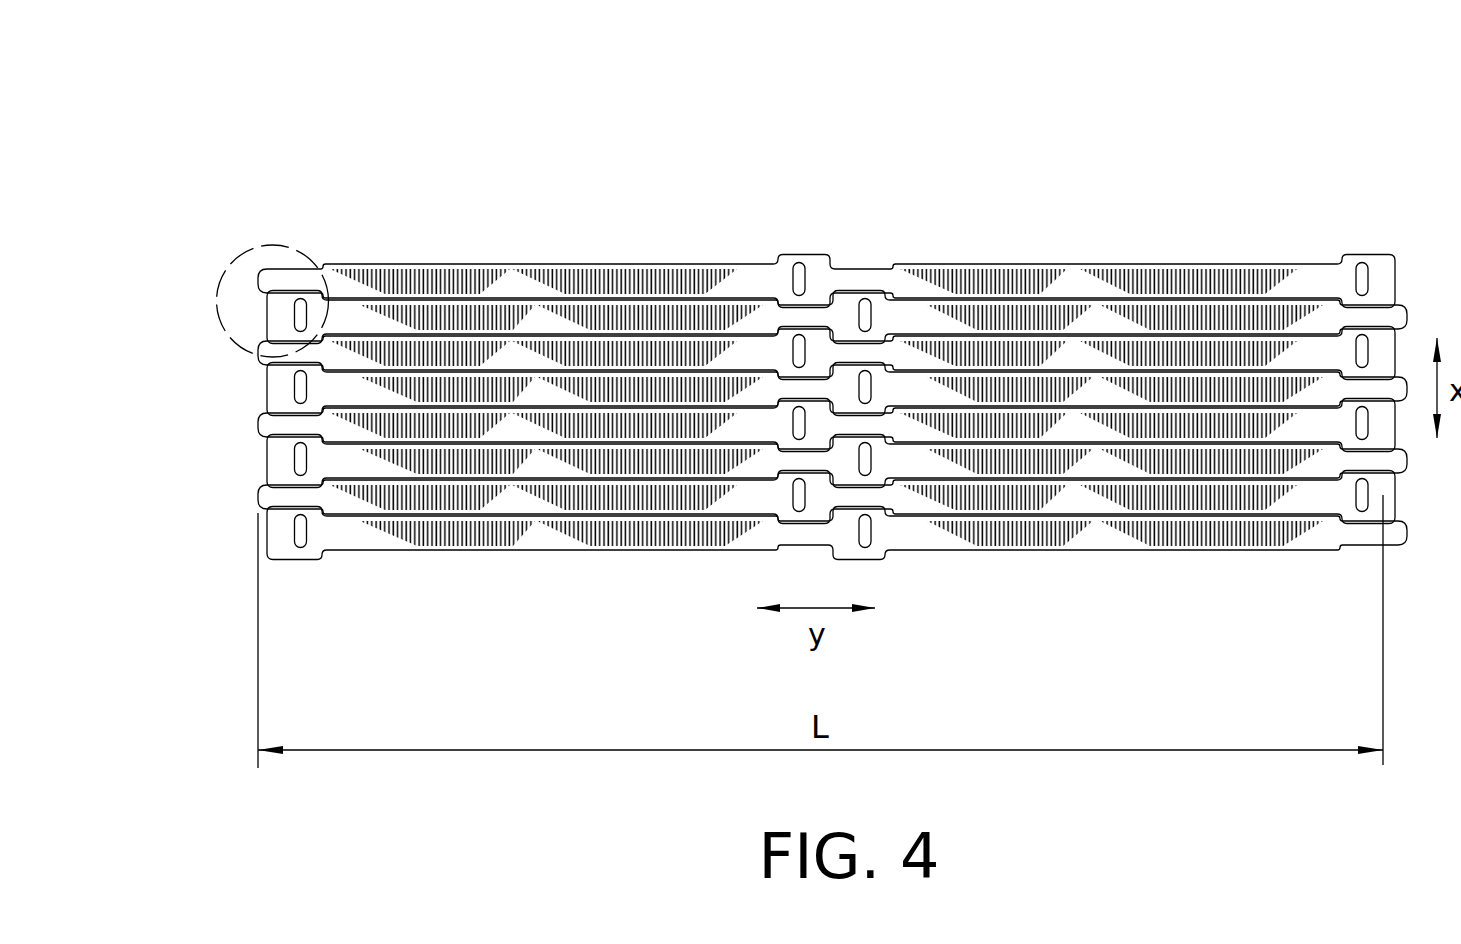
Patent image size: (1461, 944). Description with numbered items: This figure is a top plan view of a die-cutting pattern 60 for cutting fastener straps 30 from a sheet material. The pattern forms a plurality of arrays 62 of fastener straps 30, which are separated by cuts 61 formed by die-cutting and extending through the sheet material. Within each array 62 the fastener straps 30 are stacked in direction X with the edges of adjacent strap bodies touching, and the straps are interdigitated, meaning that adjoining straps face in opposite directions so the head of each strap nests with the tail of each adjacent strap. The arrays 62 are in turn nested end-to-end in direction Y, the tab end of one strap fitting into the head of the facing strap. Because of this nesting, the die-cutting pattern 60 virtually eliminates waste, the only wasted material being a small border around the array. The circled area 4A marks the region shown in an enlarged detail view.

The die-cutting pattern 60 is at (942, 148).
The array of fastener straps 62 is at (653, 232).
The cut 61 is at (972, 333).
The fastener strap 30 is at (452, 320).
The area 4A is at (232, 268).